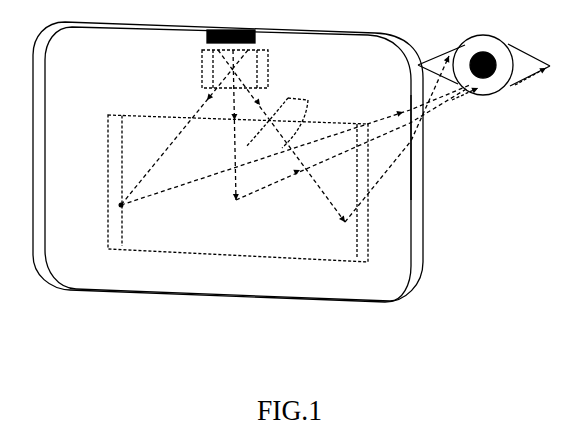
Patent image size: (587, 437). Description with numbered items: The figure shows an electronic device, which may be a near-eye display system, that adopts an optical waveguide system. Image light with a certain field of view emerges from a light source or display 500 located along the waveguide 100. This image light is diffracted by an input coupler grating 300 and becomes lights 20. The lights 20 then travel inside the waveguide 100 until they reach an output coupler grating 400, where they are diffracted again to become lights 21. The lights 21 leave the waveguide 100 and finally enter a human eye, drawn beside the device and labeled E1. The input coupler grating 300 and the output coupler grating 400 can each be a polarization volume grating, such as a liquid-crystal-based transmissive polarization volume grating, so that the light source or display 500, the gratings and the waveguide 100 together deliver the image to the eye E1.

The waveguide 100 is at (228, 162).
The light source or display 500 is at (231, 27).
The input coupler grating 300 is at (220, 69).
The lights 20 is at (282, 111).
The output coupler grating 400 is at (238, 188).
The lights 21 is at (426, 147).
The eye of user E1 is at (484, 55).